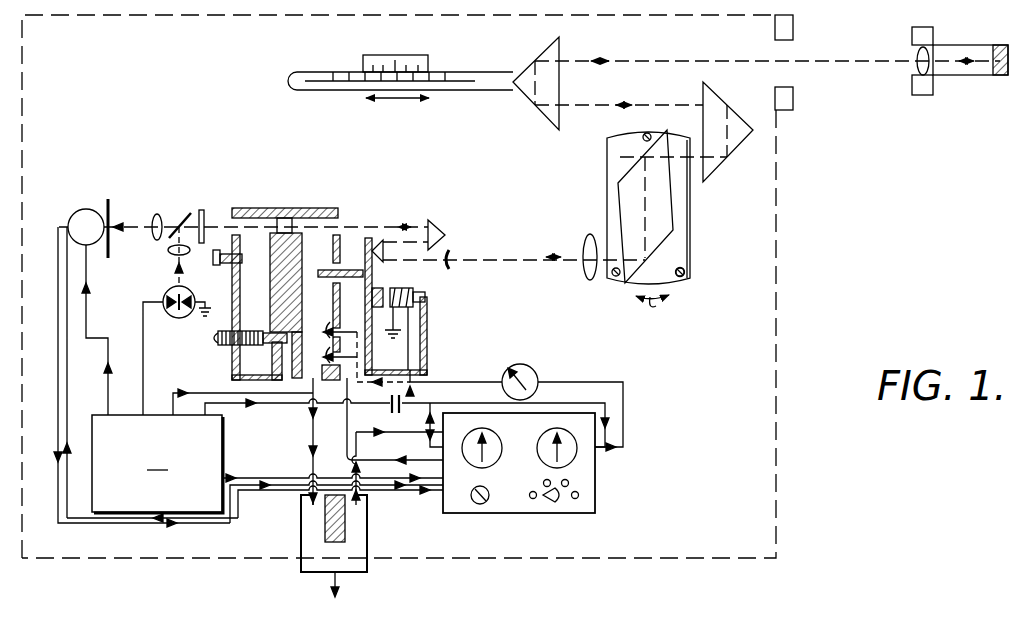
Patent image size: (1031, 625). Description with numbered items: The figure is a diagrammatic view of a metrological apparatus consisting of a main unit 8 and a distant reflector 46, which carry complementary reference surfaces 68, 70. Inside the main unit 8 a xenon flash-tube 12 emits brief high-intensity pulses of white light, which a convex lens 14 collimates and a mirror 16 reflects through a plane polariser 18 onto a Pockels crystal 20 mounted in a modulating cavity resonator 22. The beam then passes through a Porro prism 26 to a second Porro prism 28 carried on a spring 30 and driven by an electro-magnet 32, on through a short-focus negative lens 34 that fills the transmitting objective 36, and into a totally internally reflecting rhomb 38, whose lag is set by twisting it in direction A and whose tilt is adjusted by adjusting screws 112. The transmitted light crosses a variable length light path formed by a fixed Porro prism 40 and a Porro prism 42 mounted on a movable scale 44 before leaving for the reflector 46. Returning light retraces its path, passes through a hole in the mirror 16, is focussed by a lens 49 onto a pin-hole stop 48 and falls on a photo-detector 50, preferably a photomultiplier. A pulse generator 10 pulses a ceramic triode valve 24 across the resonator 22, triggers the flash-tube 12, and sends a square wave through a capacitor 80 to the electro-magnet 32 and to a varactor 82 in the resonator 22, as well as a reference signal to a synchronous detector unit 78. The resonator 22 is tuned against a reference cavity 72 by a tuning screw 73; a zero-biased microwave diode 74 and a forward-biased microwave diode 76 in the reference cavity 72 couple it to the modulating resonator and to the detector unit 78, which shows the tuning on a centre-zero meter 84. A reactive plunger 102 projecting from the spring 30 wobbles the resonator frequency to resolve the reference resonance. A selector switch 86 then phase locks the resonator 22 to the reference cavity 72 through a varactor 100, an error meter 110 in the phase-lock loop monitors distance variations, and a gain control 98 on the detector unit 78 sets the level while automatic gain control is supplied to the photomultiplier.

The main unit 8 is at (668, 558).
The pulse generator 10 is at (157, 464).
The xenon flash-tube 12 is at (168, 312).
The convex lens 14 is at (168, 253).
The mirror 16 is at (190, 213).
The plane polariser 18 is at (205, 210).
The Pockels crystal 20 is at (287, 209).
The modulating cavity resonator 22 is at (308, 208).
The ceramic triode valve 24 is at (218, 338).
The Porro prism 26 is at (440, 221).
The second Porro prism 28 is at (380, 240).
The spring 30 is at (421, 330).
The electro-magnet 32 is at (427, 297).
The short-focus negative lens 34 is at (452, 250).
The transmitting objective 36 is at (588, 276).
The totally internally reflecting rhomb 38 is at (673, 232).
The fixed Porro prism 40 is at (733, 142).
The Porro prism 42 is at (546, 124).
The movable scale 44 is at (336, 92).
The distant reflector 46 is at (985, 68).
The pin-hole stop 48 is at (110, 200).
The lens 49 is at (157, 213).
The photo-detector 50 is at (86, 209).
The reference surface 68 is at (793, 97).
The reference surface 70 is at (912, 90).
The reference cavity 72 is at (367, 565).
The tuning screw 73 is at (213, 258).
The zero-biased microwave diode 74 is at (312, 506).
The forward-biased microwave diode 76 is at (358, 506).
The synchronous detector unit 78 is at (583, 513).
The capacitor 80 is at (400, 416).
The varactor 82 is at (326, 328).
The centre-zero meter 84 is at (494, 441).
The selector switch 86 is at (556, 503).
The gain control 98 is at (480, 504).
The varactor 100 is at (300, 380).
The reactive plunger 102 is at (349, 270).
The error meter 110 is at (536, 371).
The adjusting screws 112 is at (684, 275).